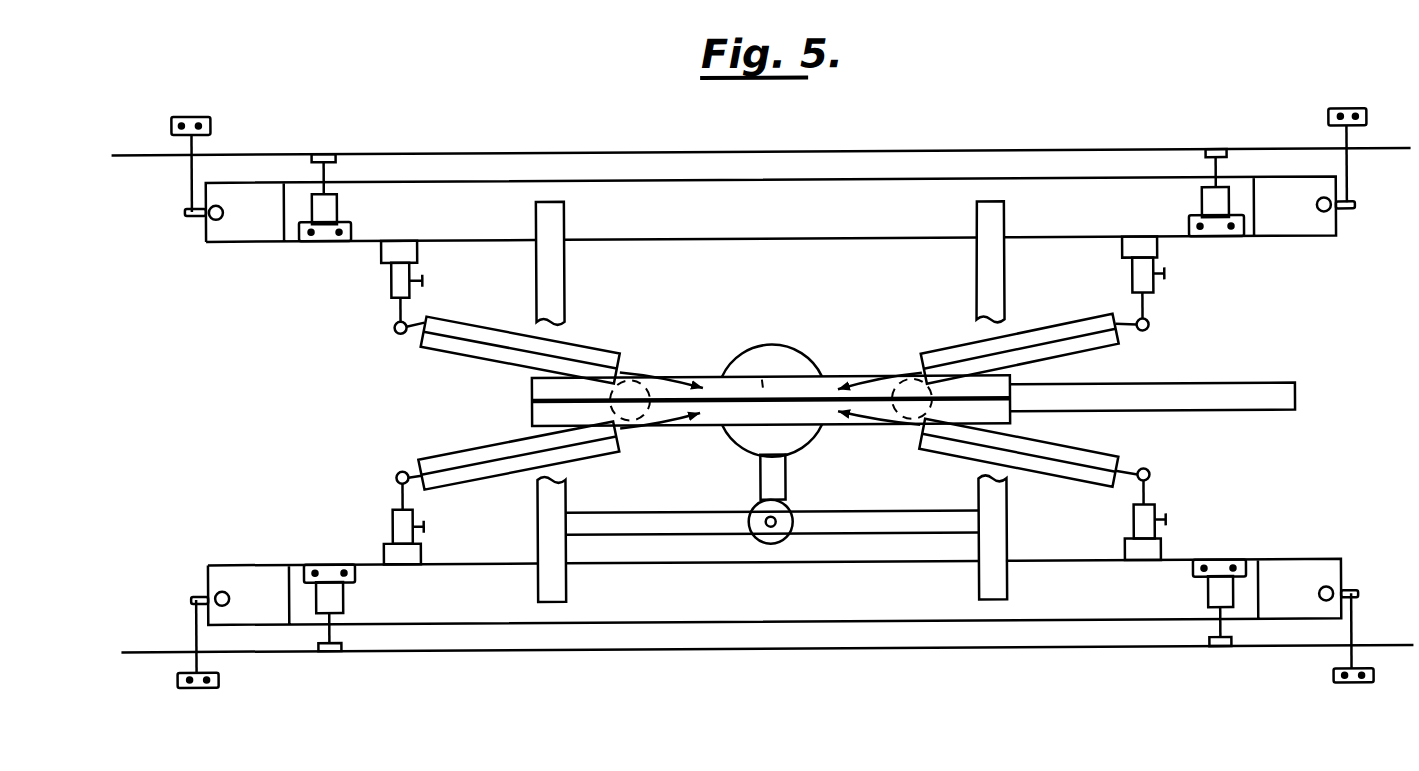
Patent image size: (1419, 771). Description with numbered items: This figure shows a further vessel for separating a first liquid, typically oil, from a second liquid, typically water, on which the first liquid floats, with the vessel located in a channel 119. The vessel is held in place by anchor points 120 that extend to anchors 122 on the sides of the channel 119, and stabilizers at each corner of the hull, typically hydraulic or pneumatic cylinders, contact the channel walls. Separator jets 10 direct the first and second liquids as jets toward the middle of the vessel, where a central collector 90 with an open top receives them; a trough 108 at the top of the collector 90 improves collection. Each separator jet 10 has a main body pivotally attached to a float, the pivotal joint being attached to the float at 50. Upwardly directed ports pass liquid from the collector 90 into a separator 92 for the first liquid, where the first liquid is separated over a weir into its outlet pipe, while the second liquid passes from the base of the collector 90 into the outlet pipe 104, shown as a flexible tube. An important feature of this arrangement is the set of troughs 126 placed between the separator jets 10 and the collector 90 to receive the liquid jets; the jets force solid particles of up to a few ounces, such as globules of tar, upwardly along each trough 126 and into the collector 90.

The separator jet 10 is at (393, 331).
The float attachment point 50 is at (242, 240).
The central collector 90 is at (647, 385).
The separator 92 is at (811, 329).
The outlet pipe 104 is at (766, 469).
The trough 108 is at (763, 388).
The channel 119 is at (313, 408).
The anchor points 120 is at (190, 212).
The anchors 122 is at (212, 122).
The troughs 126 is at (497, 330).